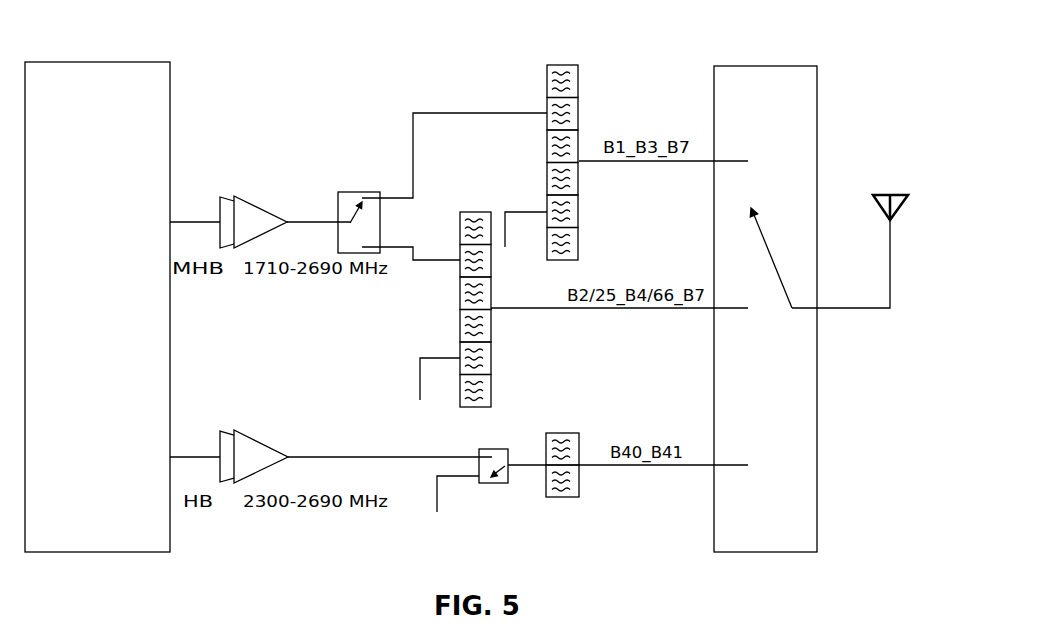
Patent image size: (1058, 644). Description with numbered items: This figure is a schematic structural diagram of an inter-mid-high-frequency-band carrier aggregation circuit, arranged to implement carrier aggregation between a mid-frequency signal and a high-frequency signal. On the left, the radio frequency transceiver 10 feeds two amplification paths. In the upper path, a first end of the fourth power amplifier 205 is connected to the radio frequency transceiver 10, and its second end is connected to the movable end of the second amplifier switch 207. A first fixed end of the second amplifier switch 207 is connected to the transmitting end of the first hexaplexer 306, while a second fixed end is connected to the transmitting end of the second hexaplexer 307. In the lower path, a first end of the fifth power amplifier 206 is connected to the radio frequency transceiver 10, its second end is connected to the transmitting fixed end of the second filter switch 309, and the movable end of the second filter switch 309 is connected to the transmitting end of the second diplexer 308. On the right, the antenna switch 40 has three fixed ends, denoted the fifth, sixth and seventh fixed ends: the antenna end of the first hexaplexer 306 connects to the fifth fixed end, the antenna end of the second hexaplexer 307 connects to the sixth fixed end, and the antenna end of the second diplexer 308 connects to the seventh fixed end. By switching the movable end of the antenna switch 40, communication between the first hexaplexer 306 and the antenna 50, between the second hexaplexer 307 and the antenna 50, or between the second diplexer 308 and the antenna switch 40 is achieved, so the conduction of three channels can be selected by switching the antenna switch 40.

The radio frequency transceiver 10 is at (172, 75).
The fourth power amplifier 205 is at (242, 197).
The fifth power amplifier 206 is at (252, 432).
The second amplifier switch 207 is at (340, 192).
The first hexaplexer 306 is at (560, 65).
The second hexaplexer 307 is at (472, 212).
The second diplexer 308 is at (565, 433).
The second filter switch 309 is at (480, 449).
The antenna switch 40 is at (790, 66).
The antenna 50 is at (882, 196).